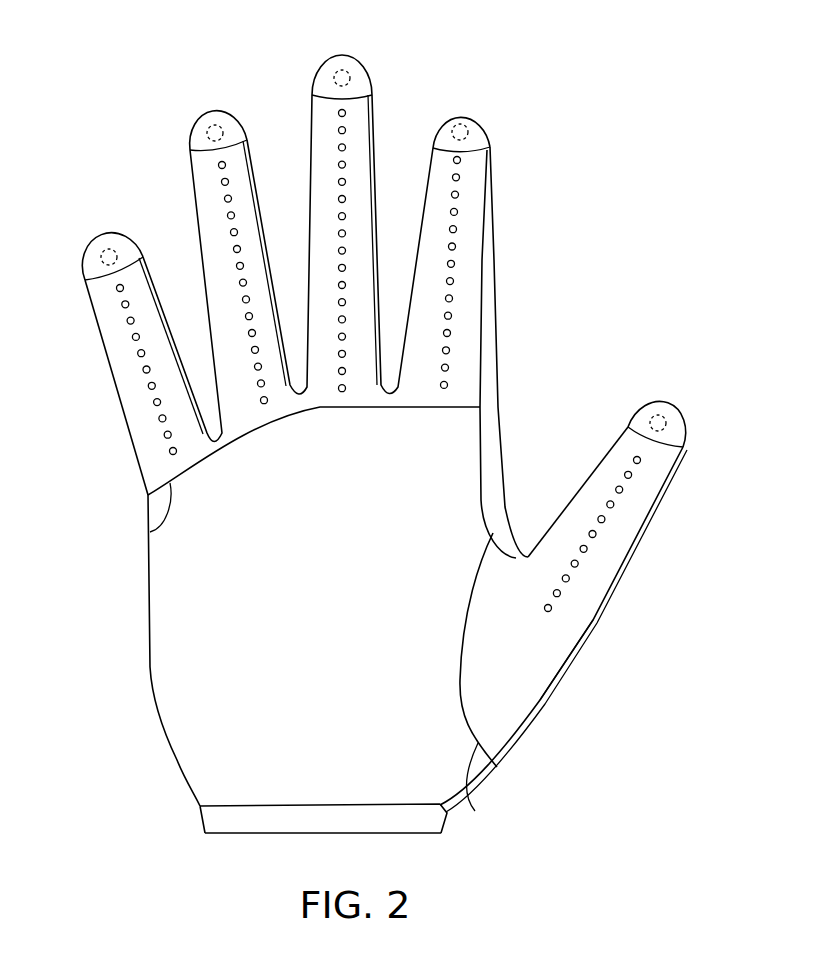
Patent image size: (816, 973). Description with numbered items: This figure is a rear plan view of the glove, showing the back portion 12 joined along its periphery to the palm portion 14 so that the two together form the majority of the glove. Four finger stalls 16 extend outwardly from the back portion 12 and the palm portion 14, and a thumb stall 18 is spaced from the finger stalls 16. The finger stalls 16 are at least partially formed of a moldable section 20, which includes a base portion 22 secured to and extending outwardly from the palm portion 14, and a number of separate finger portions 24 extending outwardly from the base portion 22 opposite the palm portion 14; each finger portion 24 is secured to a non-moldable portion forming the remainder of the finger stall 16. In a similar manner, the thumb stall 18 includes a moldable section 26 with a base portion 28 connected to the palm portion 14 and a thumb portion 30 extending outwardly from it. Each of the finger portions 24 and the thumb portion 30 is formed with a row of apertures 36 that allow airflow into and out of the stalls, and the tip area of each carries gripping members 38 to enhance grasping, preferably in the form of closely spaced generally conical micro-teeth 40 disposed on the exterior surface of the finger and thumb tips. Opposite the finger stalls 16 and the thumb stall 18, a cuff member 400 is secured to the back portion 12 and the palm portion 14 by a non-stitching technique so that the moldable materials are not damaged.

The back portion 12 is at (503, 441).
The palm portion 14 is at (194, 590).
The finger stalls 16 is at (186, 360).
The thumb stall 18 is at (583, 652).
The moldable section 20 is at (130, 417).
The base portion 22 is at (152, 532).
The finger portions 24 is at (96, 318).
The moldable section 26 is at (548, 702).
The base portion 28 is at (478, 810).
The thumb portion 30 is at (596, 473).
The apertures 36 is at (241, 299).
The gripping members 38 is at (126, 250).
The micro-teeth 40 is at (115, 262).
The cuff member 400 is at (208, 818).